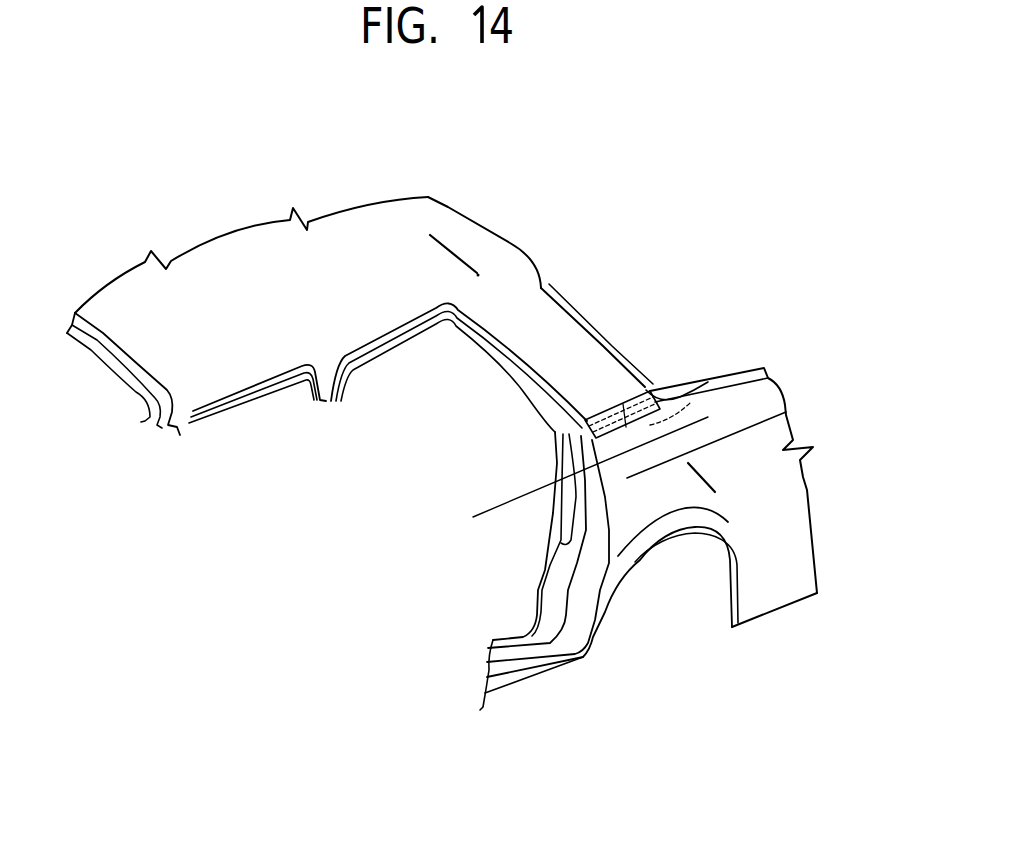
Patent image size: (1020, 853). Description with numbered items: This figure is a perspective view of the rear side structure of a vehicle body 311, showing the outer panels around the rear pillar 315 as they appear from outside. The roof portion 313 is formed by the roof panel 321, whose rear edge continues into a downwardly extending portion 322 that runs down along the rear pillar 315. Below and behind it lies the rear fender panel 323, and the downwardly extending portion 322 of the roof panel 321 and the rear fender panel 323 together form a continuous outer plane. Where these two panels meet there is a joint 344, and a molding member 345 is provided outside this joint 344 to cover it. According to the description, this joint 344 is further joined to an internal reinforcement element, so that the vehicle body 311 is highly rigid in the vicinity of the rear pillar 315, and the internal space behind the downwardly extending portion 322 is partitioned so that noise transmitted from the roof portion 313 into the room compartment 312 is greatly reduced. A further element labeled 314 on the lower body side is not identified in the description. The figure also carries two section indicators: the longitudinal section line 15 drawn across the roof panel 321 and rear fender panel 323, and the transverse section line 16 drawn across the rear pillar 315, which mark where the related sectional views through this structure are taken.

The vehicle body 311 is at (769, 213).
The room compartment 312 is at (504, 555).
The roof portion 313 is at (278, 265).
The rear quarter panel 314 is at (672, 552).
The rear pillar 315 is at (462, 313).
The roof panel 321 is at (484, 226).
The downwardly extending portion 322 is at (588, 345).
The rear fender panel 323 is at (756, 605).
The joint 344 is at (700, 383).
The molding member 345 is at (655, 393).
The longitudinal section line 15 is at (424, 250).
The transverse section line 16 is at (473, 517).